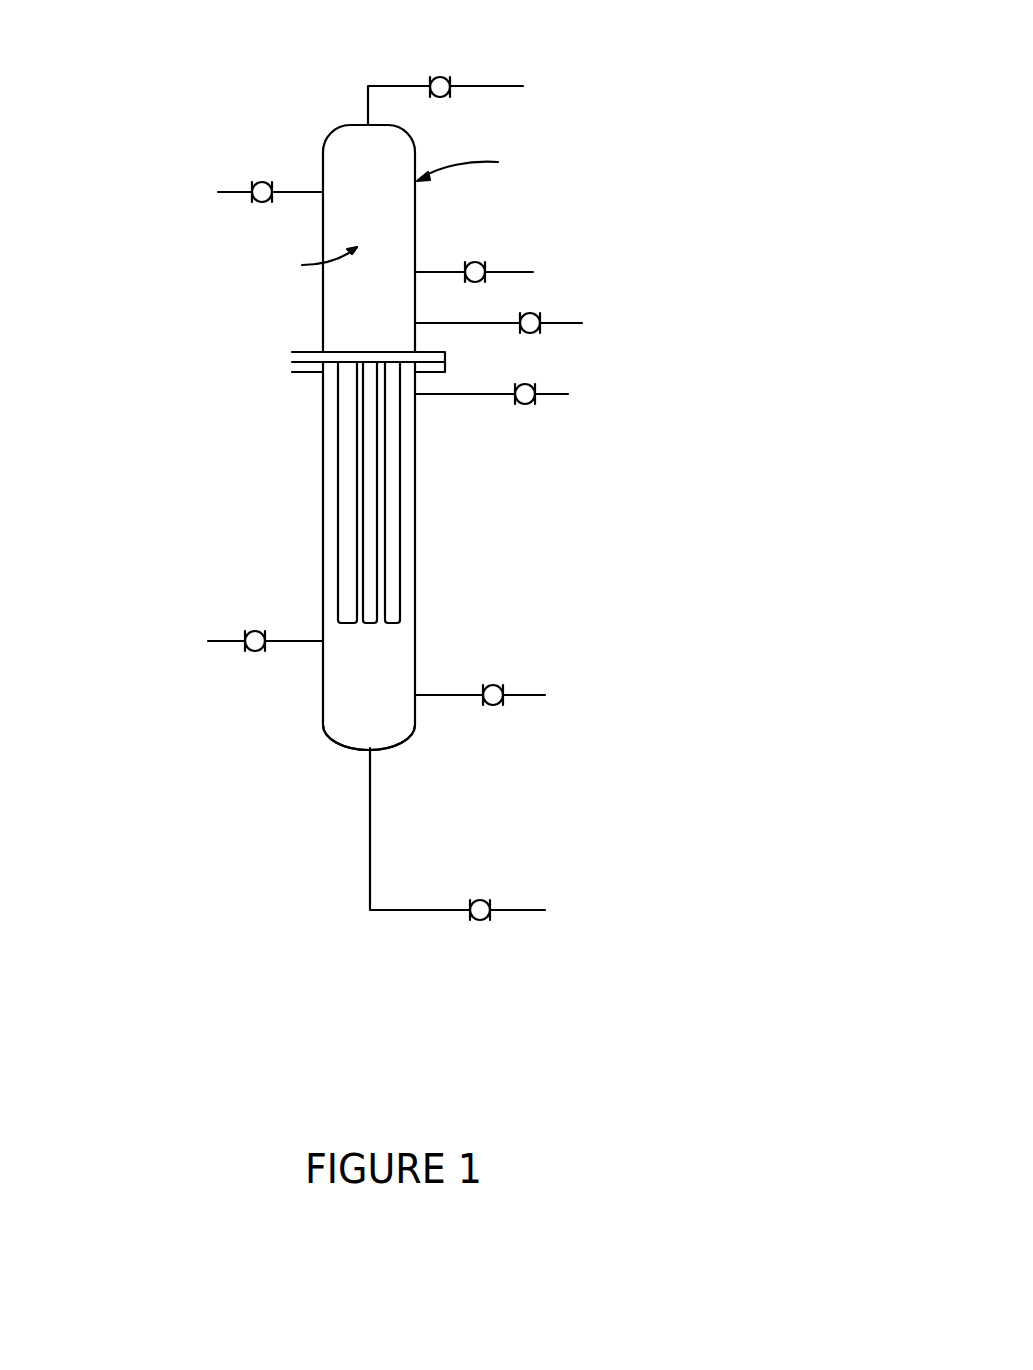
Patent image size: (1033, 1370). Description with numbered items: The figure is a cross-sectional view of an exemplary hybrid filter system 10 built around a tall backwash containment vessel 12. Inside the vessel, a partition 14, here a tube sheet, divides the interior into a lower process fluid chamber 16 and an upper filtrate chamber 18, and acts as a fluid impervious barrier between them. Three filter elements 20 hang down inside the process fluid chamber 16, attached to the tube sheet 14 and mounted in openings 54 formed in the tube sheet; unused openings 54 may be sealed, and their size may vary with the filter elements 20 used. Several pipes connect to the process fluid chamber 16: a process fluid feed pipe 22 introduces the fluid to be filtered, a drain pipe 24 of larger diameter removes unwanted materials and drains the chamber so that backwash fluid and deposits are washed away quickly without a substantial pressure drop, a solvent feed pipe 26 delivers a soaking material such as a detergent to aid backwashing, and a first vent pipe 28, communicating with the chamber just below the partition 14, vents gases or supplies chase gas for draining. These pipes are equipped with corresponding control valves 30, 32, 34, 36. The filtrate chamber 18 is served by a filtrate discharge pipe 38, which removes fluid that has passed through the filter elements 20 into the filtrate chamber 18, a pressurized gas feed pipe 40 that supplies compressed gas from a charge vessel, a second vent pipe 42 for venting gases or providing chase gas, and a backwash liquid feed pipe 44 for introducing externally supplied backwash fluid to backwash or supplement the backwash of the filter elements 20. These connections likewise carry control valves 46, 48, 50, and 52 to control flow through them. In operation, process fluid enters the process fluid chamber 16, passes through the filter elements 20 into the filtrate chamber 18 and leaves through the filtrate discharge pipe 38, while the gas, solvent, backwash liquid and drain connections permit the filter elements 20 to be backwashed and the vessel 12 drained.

The hybrid filter system 10 is at (178, 28).
The backwash containment vessel 12 is at (322, 448).
The partition 14 is at (358, 362).
The process fluid chamber 16 is at (333, 730).
The filtrate chamber 18 is at (337, 322).
The filter elements 20 is at (348, 625).
The process fluid feed pipe 22 is at (296, 638).
The drain pipe 24 is at (368, 887).
The solvent feed pipe 26 is at (522, 694).
The first vent pipe 28 is at (458, 395).
The control valve 30 is at (253, 652).
The control valve 32 is at (482, 921).
The control valve 34 is at (495, 707).
The control valve 36 is at (526, 384).
The filtrate discharge pipe 38 is at (433, 272).
The pressurized gas feed pipe 40 is at (410, 84).
The second vent pipe 42 is at (438, 323).
The backwash liquid feed pipe 44 is at (238, 192).
The control valve 46 is at (478, 263).
The control valve 48 is at (440, 77).
The control valve 50 is at (535, 314).
The control valve 52 is at (262, 182).
The openings 54 is at (370, 362).